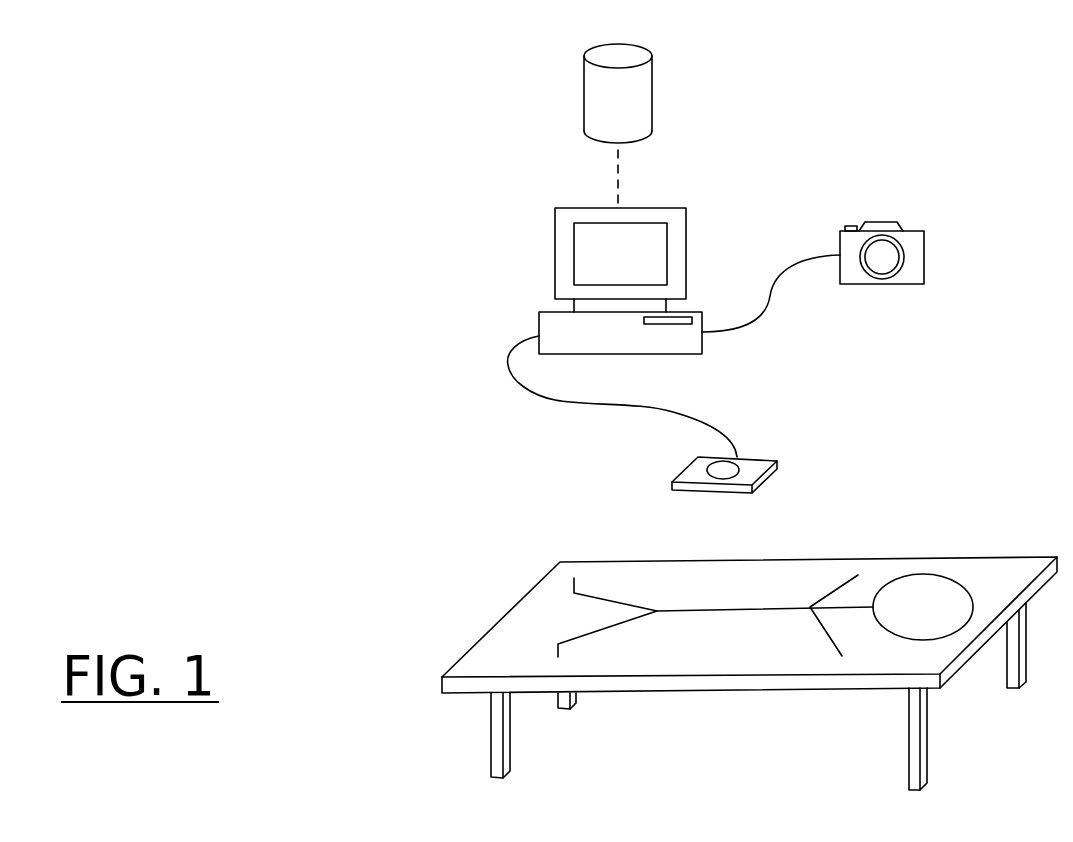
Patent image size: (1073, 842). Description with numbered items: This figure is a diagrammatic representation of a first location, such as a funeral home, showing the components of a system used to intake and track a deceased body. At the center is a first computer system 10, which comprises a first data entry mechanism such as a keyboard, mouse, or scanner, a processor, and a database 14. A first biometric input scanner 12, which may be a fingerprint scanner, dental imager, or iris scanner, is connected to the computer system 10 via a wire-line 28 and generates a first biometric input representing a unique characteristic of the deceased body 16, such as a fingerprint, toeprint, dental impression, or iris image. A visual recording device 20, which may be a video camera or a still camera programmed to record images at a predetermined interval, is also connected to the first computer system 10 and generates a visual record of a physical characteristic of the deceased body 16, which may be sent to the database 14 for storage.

The first computer system 10 is at (535, 206).
The first biometric input scanner 12 is at (777, 463).
The database 14 is at (653, 90).
The deceased body 16 is at (941, 575).
The visual recording device 20 is at (924, 252).
The wire-line 28 is at (555, 401).